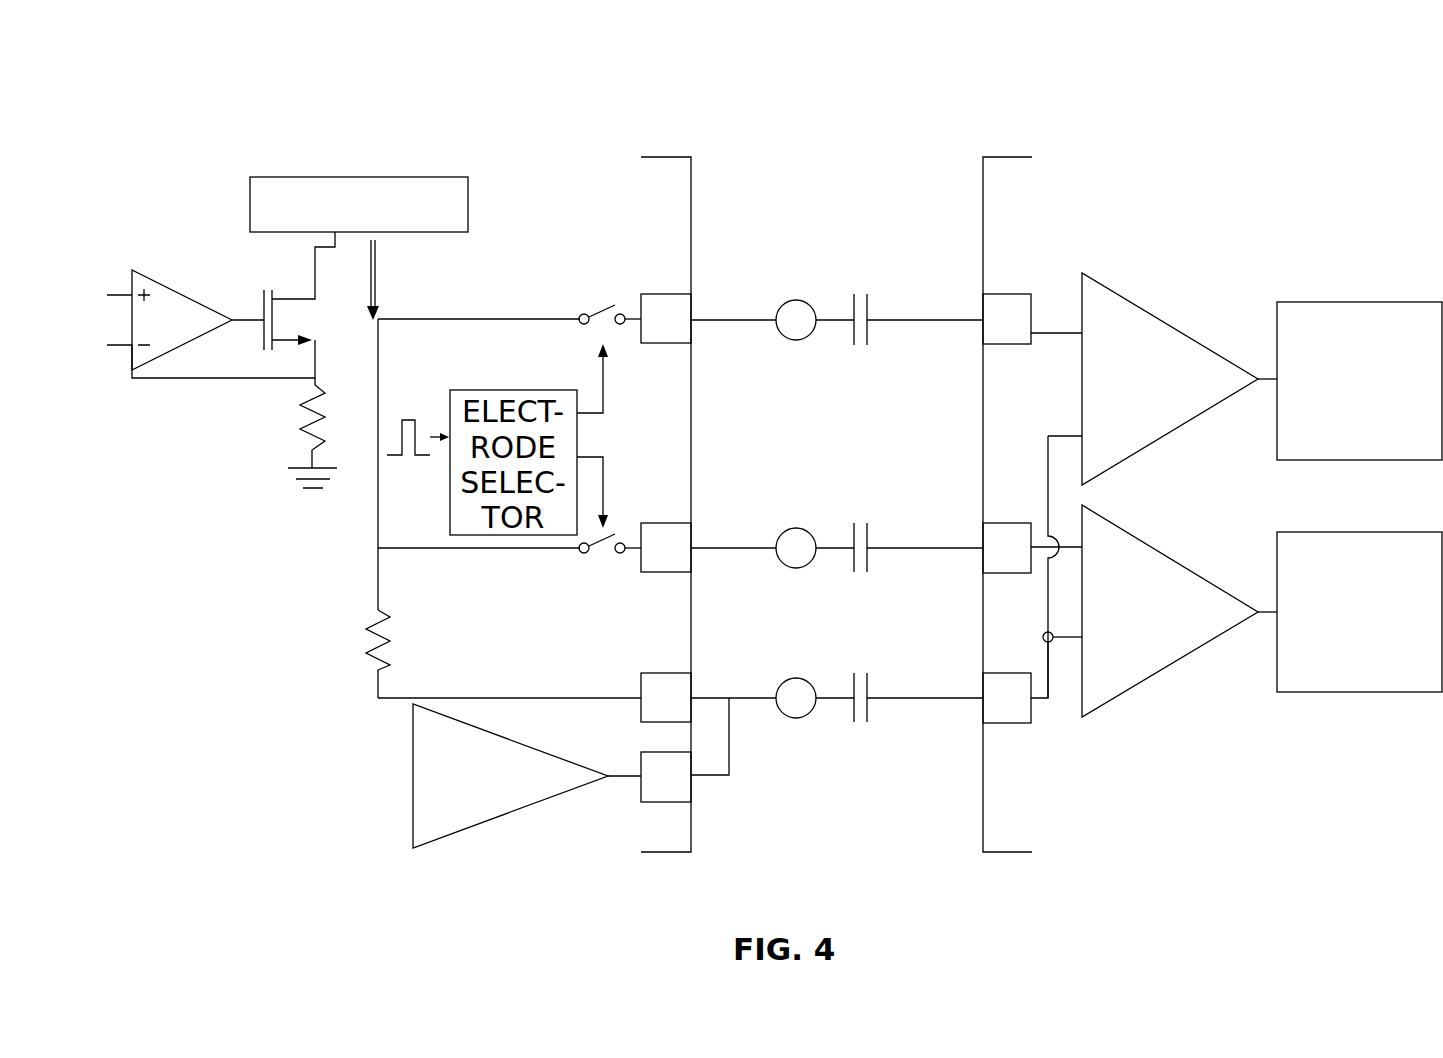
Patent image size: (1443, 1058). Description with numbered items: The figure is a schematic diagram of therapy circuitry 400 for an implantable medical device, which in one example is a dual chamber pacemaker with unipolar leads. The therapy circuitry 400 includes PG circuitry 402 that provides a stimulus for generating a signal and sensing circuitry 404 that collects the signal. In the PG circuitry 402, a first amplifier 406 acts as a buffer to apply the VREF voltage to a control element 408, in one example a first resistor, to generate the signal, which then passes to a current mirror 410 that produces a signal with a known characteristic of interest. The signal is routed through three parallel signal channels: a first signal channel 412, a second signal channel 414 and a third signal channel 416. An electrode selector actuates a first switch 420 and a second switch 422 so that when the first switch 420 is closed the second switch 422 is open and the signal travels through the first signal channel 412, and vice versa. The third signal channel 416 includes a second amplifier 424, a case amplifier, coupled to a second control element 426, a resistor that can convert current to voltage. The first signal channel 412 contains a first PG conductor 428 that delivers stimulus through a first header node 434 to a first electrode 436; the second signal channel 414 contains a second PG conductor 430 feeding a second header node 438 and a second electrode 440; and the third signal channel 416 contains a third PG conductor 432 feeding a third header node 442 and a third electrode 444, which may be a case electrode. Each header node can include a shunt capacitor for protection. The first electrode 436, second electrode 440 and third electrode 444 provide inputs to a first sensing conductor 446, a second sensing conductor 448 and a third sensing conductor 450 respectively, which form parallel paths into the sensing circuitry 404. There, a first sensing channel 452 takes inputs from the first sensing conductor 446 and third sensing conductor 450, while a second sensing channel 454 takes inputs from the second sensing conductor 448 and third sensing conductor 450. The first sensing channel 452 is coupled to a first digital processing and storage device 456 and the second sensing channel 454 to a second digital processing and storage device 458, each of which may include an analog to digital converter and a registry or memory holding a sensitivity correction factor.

The therapy circuitry 400 is at (1338, 86).
The PG circuitry 402 is at (596, 148).
The sensing circuitry 404 is at (1258, 198).
The first amplifier 406 is at (162, 283).
The control element 408 is at (320, 435).
The current mirror 410 is at (335, 177).
The first signal channel 412 is at (398, 319).
The second signal channel 414 is at (397, 548).
The third signal channel 416 is at (427, 698).
The first switch 420 is at (600, 308).
The second switch 422 is at (597, 548).
The second amplifier 424 is at (500, 820).
The second control element 426 is at (380, 620).
The first PG conductor 428 is at (668, 294).
The second PG conductor 430 is at (668, 523).
The third PG conductor 432 is at (667, 673).
The first header node 434 is at (728, 323).
The first electrode 436 is at (795, 340).
The second header node 438 is at (717, 550).
The second electrode 440 is at (795, 568).
The third header node 442 is at (746, 702).
The third electrode 444 is at (795, 718).
The first sensing conductor 446 is at (997, 294).
The second sensing conductor 448 is at (997, 523).
The third sensing conductor 450 is at (997, 673).
The first sensing channel 452 is at (1192, 340).
The second sensing channel 454 is at (1192, 570).
The first digital processing and storage device 456 is at (1325, 302).
The second digital processing and storage device 458 is at (1325, 532).